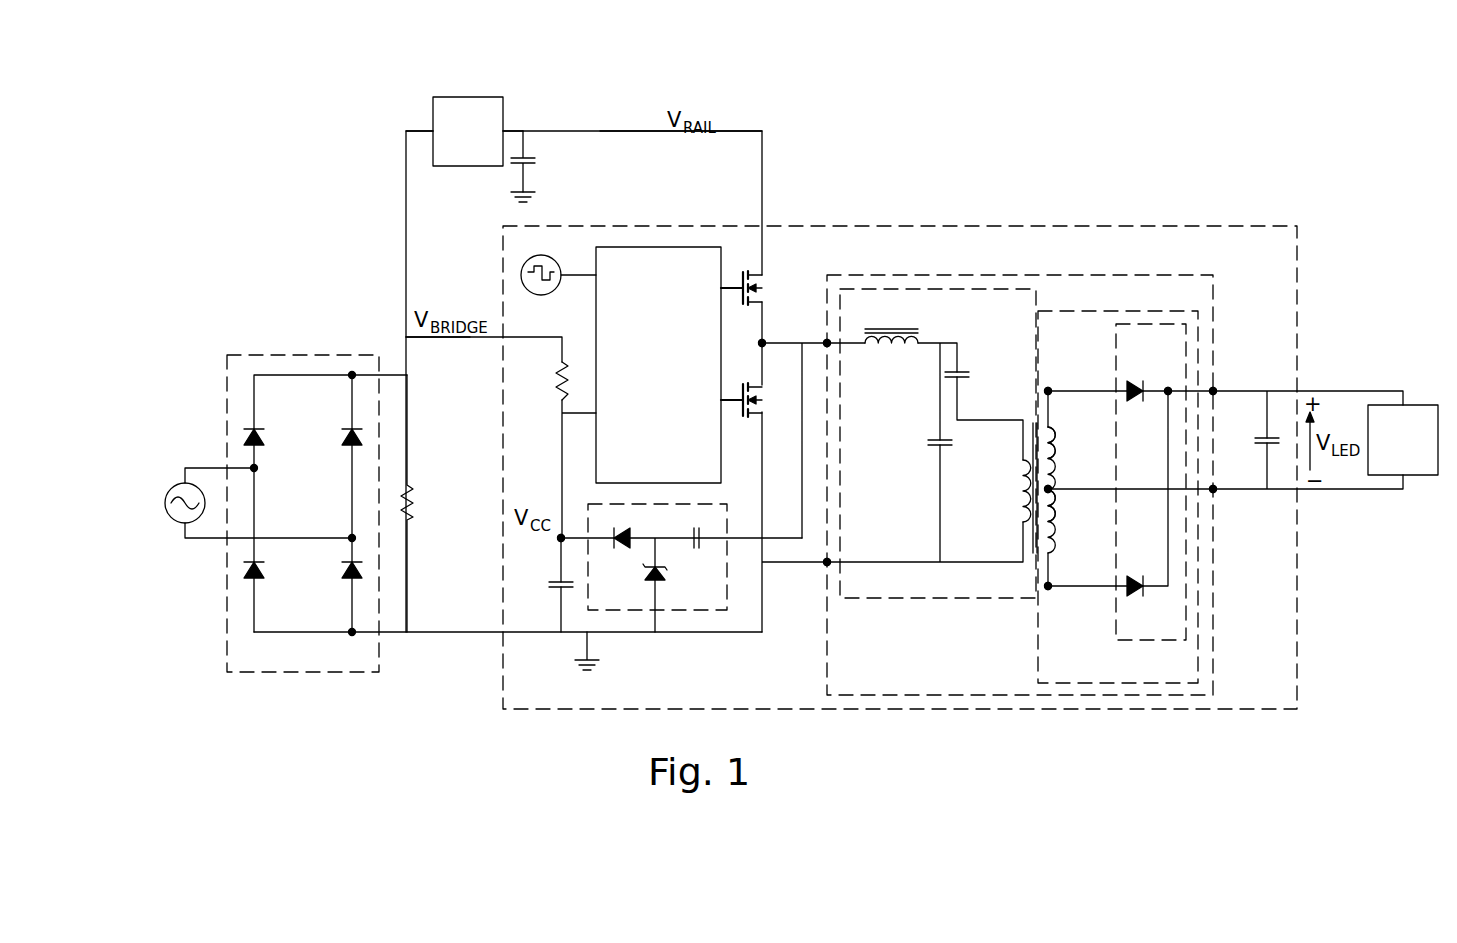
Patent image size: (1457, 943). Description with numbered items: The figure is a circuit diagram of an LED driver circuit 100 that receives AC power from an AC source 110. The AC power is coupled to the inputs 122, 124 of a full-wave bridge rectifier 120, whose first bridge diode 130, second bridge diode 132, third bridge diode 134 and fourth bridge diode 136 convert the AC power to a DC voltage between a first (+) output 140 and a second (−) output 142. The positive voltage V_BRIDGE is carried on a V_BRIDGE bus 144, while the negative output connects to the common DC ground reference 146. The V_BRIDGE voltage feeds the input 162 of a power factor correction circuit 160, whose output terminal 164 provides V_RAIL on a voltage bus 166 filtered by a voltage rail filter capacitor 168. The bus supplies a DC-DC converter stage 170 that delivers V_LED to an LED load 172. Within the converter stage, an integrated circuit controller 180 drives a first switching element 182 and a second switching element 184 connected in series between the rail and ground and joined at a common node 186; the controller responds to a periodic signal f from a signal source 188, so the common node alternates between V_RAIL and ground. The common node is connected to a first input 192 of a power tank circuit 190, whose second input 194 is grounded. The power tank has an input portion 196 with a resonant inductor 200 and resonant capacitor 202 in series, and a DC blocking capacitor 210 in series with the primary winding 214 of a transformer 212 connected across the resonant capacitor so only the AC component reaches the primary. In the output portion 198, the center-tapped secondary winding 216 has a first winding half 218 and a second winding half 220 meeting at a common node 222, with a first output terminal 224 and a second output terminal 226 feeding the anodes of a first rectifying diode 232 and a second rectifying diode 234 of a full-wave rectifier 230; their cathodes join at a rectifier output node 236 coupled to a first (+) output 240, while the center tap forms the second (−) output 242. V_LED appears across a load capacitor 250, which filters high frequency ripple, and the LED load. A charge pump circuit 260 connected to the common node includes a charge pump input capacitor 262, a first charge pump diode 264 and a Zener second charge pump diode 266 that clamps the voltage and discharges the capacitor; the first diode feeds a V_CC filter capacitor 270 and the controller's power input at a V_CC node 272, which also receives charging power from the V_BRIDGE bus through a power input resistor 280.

The LED driver circuit 100 is at (1333, 158).
The AC source 110 is at (175, 488).
The full-wave bridge rectifier 120 is at (322, 663).
The input of the bridge rectifier 122 is at (257, 471).
The input of the bridge rectifier 124 is at (350, 536).
The first bridge diode 130 is at (284, 426).
The second bridge diode 132 is at (345, 441).
The third bridge diode 134 is at (284, 560).
The fourth bridge diode 136 is at (345, 574).
The first (+) output of the bridge rectifier 140 is at (350, 378).
The second (−) output of the bridge rectifier 142 is at (350, 630).
The V_BRIDGE bus 144 is at (430, 338).
The DC ground reference 146 is at (520, 192).
The power factor correction (PFC) circuit 160 is at (490, 97).
The input of the PFC circuit 162 is at (433, 131).
The output terminal of the PFC circuit 164 is at (503, 131).
The V_RAIL voltage bus 166 is at (665, 133).
The voltage rail filter capacitor 168 is at (527, 160).
The DC-DC converter stage 170 is at (756, 686).
The LED load 172 is at (1408, 478).
The integrated circuit controller 180 is at (682, 377).
The first semiconductor switching element 182 is at (754, 296).
The second switching element 184 is at (754, 408).
The common node 186 is at (764, 341).
The signal source 188 is at (540, 295).
The power tank circuit 190 is at (957, 688).
The first input of the power tank circuit 192 is at (826, 340).
The second input of the power tank circuit 194 is at (827, 563).
The input portion of the power tank circuit 196 is at (962, 590).
The output portion of the power tank circuit 198 is at (1170, 673).
The resonant inductor 200 is at (892, 330).
The resonant capacitor 202 is at (937, 442).
The DC blocking capacitor 210 is at (962, 372).
The transformer 212 is at (1028, 418).
The primary winding 214 is at (1020, 480).
The center-tapped secondary winding 216 is at (1055, 529).
The first winding half 218 is at (1058, 527).
The second winding half 220 is at (1072, 425).
The common node of the secondary winding 222 is at (1052, 487).
The first output terminal 224 is at (1051, 589).
The second output terminal 226 is at (1051, 389).
The full-wave rectifier 230 is at (1168, 630).
The first rectifying diode 232 is at (1136, 580).
The second rectifying diode 234 is at (1134, 385).
The rectifier output node 236 is at (1168, 388).
The first (+) output of the power tank circuit 240 is at (1215, 388).
The second (−) output of the power tank circuit 242 is at (1215, 492).
The load capacitor 250 is at (1263, 438).
The charge pump circuit 260 is at (644, 600).
The charge pump input capacitor 262 is at (692, 534).
The first charge pump diode 264 is at (650, 567).
The second charge pump diode 266 is at (661, 577).
The V_CC filter capacitor 270 is at (559, 588).
The V_CC node 272 is at (559, 541).
The power input resistor 280 is at (559, 388).